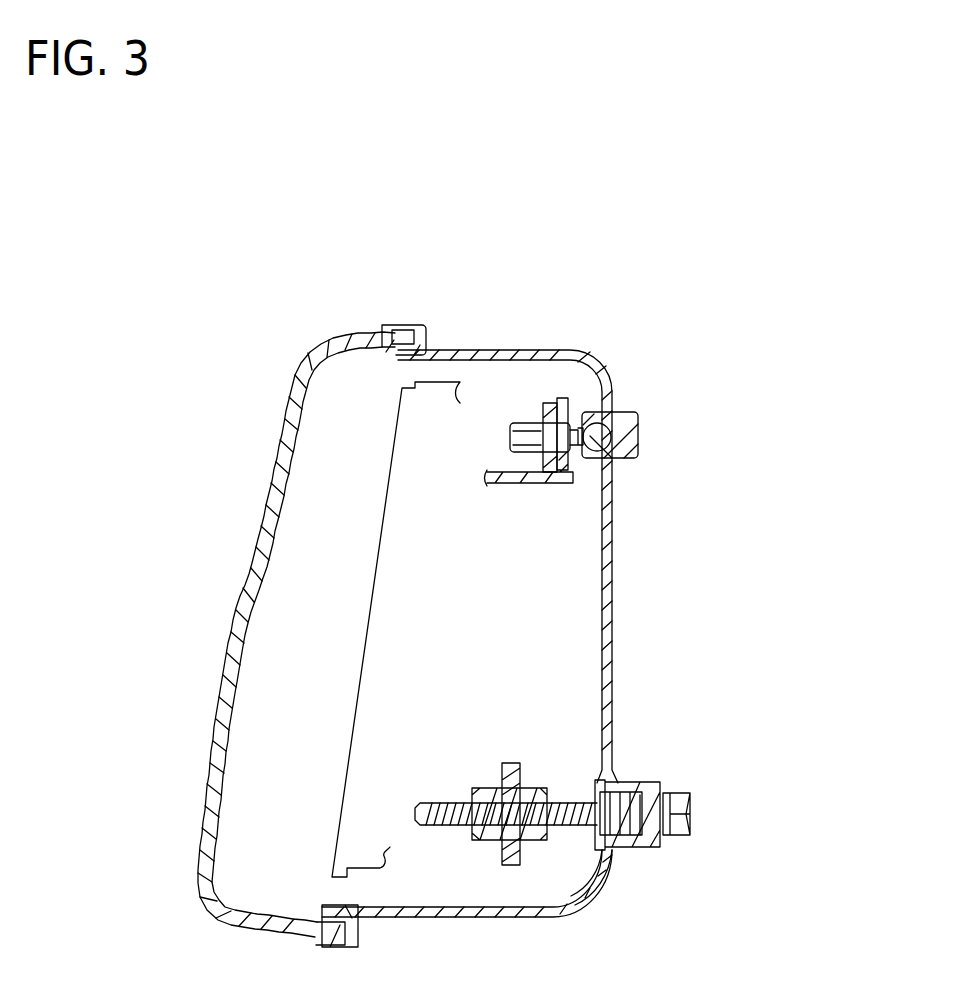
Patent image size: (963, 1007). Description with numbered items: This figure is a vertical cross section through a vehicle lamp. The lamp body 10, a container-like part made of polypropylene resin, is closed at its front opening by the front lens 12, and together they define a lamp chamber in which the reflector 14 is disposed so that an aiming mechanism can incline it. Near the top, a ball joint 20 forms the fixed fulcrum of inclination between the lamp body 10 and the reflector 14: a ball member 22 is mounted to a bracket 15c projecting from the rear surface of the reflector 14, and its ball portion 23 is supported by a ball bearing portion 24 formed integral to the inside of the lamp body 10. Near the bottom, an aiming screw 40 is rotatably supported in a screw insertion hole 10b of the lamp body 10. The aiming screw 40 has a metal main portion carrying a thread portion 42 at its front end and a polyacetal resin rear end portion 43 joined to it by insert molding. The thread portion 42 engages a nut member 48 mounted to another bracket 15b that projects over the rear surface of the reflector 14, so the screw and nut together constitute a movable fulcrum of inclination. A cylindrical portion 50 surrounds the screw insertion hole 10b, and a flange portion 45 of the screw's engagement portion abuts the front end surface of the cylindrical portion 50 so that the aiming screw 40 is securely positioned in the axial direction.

The lamp body 10 is at (616, 590).
The screw insertion hole 10b is at (641, 797).
The front lens 12 is at (277, 468).
The reflector 14 is at (362, 665).
The bracket 15b is at (513, 866).
The bracket 15c is at (558, 403).
The ball joint 20 is at (652, 397).
The ball member 22 is at (525, 428).
The ball portion 23 is at (604, 450).
The ball bearing portion 24 is at (641, 430).
The aiming screw 40 is at (562, 800).
The thread portion 42 is at (452, 842).
The rear end portion 43 is at (692, 817).
The flange portion 45 is at (581, 788).
The nut member 48 is at (591, 825).
The cylindrical portion 50 is at (631, 851).